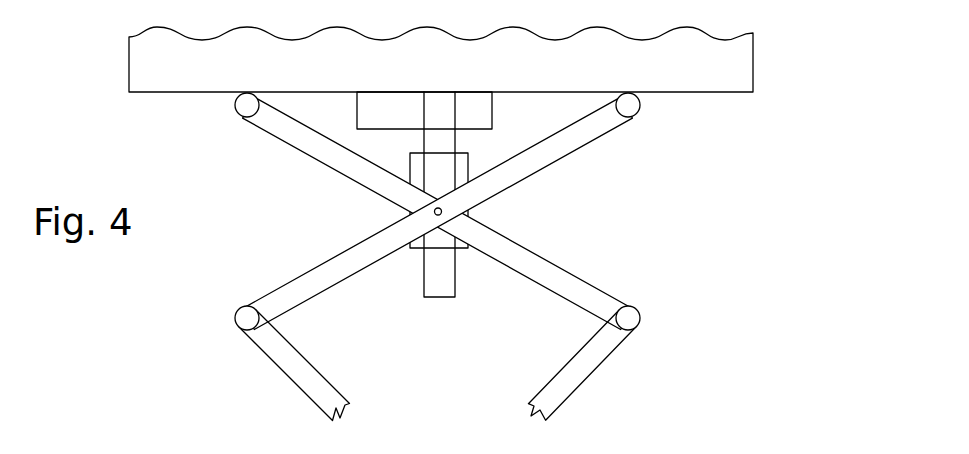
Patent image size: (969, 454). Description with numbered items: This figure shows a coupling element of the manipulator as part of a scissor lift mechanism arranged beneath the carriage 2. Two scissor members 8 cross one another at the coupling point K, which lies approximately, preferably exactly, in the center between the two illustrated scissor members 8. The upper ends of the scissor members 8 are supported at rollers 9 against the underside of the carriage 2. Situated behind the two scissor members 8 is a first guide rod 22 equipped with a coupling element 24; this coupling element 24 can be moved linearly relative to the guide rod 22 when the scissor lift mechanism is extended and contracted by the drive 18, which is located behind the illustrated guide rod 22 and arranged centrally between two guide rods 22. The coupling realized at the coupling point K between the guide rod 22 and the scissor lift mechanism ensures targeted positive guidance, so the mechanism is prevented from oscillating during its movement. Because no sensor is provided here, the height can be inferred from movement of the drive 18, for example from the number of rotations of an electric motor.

The carriage 2 is at (753, 63).
The scissor members 8 is at (338, 160).
The rollers / pivot joints 9 is at (247, 107).
The drive 18 is at (383, 112).
The guide rod 22 is at (448, 277).
The coupling element 24 is at (470, 172).
The coupling point K is at (443, 211).